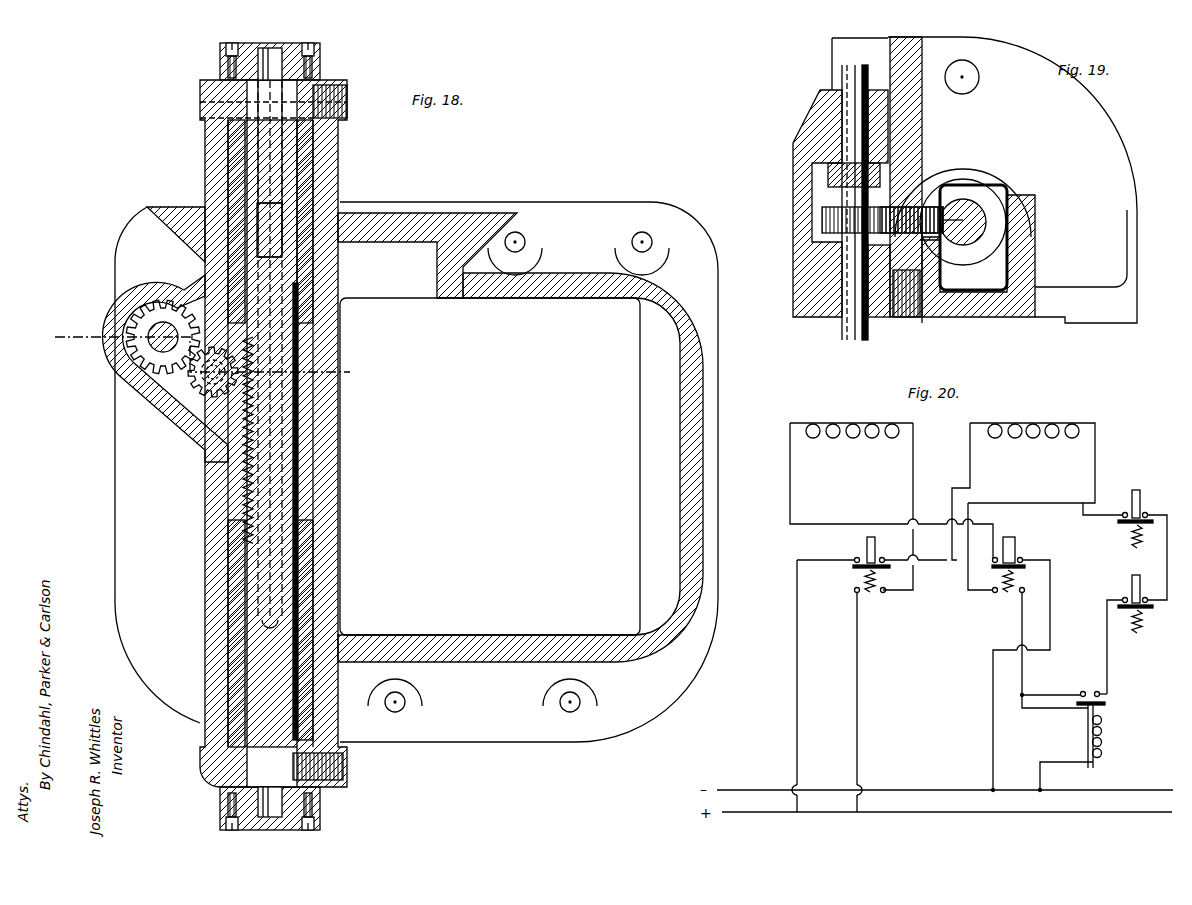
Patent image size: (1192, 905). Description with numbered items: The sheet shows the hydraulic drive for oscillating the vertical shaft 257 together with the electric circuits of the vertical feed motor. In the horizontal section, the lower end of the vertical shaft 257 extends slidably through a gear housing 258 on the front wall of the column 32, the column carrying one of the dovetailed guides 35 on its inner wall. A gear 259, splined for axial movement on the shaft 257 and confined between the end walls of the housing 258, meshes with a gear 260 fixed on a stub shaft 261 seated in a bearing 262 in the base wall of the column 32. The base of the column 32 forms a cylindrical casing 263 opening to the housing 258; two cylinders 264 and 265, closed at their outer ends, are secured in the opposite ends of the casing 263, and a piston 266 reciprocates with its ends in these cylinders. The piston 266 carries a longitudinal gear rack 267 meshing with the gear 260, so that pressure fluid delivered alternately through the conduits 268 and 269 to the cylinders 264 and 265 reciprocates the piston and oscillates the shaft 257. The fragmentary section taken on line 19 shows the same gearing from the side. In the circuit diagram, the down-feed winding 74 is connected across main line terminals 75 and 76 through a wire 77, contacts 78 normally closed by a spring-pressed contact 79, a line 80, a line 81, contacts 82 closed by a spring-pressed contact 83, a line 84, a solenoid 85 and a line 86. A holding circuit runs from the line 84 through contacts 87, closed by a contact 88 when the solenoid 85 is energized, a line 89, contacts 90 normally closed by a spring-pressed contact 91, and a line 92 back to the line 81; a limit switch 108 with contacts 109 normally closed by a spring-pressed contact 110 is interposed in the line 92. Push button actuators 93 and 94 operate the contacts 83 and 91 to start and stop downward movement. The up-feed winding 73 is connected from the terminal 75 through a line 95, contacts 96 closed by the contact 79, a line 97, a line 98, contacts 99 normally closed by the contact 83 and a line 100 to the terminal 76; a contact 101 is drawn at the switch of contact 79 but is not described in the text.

In FIG. 18, the section line 19— 19 is at (358, 377).
In FIG. 18, the vertical column 32 is at (697, 581).
In FIG. 19, the vertical column 32 is at (1132, 284).
In FIG. 18, the dovetailed guide 35 is at (473, 213).
In FIG. 20, the winding 73 is at (850, 420).
In FIG. 20, the winding 74 is at (1048, 420).
In FIG. 20, the main line terminal 75 is at (955, 810).
In FIG. 20, the main line terminal 76 is at (920, 788).
In FIG. 20, the wire 77 is at (796, 722).
In FIG. 20, the switch contacts 78 is at (856, 557).
In FIG. 20, the spring-pressed contact 79 is at (855, 568).
In FIG. 20, the line 80 is at (940, 561).
In FIG. 20, the line 81 is at (1034, 503).
In FIG. 20, the switch contacts 82 is at (1020, 593).
In FIG. 20, the spring-pressed contact 83 is at (1025, 568).
In FIG. 20, the line 84 is at (1023, 673).
In FIG. 20, the solenoid 85 is at (1100, 733).
In FIG. 20, the line 86 is at (1046, 761).
In FIG. 20, the switch contacts 87 is at (1096, 691).
In FIG. 20, the contact 88 is at (1106, 703).
In FIG. 20, the line 89 is at (1108, 654).
In FIG. 20, the switch contacts 90 is at (1123, 598).
In FIG. 20, the spring-pressed contact 91 is at (1152, 608).
In FIG. 20, the line 92 is at (1167, 545).
In FIG. 20, the push button actuator 93 is at (1017, 543).
In FIG. 20, the push button actuator 94 is at (1139, 580).
In FIG. 20, the line 95 is at (859, 710).
In FIG. 20, the switch contacts 96 is at (883, 595).
In FIG. 20, the line 97 is at (912, 482).
In FIG. 20, the line 98 is at (791, 504).
In FIG. 20, the switch contacts 99 is at (1023, 559).
In FIG. 20, the line 100 is at (992, 711).
In FIG. 20, the contact 101 is at (888, 555).
In FIG. 20, the switch 108 is at (1152, 508).
In FIG. 20, the switch contacts 109 is at (1125, 512).
In FIG. 20, the spring-pressed contact 110 is at (1118, 522).
In FIG. 18, the vertical shaft 257 is at (152, 340).
In FIG. 19, the vertical shaft 257 is at (843, 330).
In FIG. 18, the gear housing 258 is at (117, 313).
In FIG. 19, the gear housing 258 is at (795, 212).
In FIG. 18, the gear 259 is at (147, 350).
In FIG. 19, the gear 259 is at (822, 225).
In FIG. 18, the gear 260 is at (196, 383).
In FIG. 19, the gear 260 is at (896, 205).
In FIG. 19, the stub shaft 261 is at (903, 320).
In FIG. 19, the bearing 262 is at (920, 320).
In FIG. 18, the cylindrical casing 263 is at (340, 416).
In FIG. 19, the cylindrical casing 263 is at (995, 172).
In FIG. 18, the cylinder 264 is at (307, 187).
In FIG. 19, the cylinder 264 is at (1000, 232).
In FIG. 18, the cylinder 265 is at (303, 570).
In FIG. 18, the piston 266 is at (297, 362).
In FIG. 19, the piston 266 is at (985, 220).
In FIG. 18, the gear rack 267 is at (241, 453).
In FIG. 19, the gear rack 267 is at (960, 205).
In FIG. 18, the conduit 268 is at (327, 81).
In FIG. 18, the conduit 269 is at (343, 768).